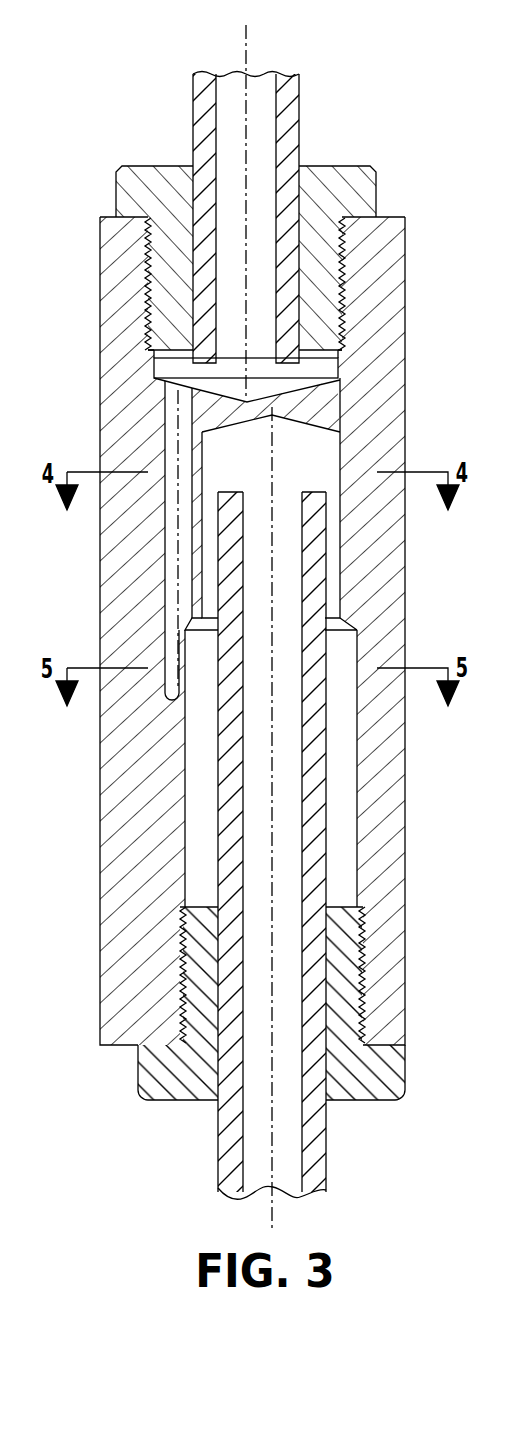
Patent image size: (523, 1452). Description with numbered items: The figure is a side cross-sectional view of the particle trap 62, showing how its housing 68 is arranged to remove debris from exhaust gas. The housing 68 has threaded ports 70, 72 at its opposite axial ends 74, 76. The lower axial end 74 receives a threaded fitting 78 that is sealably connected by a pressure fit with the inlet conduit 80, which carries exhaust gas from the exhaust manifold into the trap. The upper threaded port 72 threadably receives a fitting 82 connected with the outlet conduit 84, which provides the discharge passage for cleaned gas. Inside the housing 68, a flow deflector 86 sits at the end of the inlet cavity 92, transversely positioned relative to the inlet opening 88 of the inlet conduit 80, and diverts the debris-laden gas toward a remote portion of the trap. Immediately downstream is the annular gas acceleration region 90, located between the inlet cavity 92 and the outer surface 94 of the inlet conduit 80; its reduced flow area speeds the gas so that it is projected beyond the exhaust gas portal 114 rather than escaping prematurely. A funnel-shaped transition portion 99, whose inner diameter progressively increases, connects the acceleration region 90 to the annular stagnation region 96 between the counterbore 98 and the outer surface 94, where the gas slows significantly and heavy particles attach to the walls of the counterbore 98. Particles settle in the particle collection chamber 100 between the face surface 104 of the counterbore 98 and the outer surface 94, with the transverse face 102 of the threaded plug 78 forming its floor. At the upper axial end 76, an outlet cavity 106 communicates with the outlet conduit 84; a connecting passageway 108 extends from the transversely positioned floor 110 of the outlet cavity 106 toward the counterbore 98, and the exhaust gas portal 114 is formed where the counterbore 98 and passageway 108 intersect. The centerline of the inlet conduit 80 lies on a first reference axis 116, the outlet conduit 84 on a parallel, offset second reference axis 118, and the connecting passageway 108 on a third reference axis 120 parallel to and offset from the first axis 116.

The particle trap 62 is at (388, 118).
The housing 68 is at (100, 245).
The threaded port 70 is at (178, 1030).
The threaded port 72 is at (345, 290).
The axial end 74 is at (393, 1010).
The axial end 76 is at (384, 225).
The threaded fitting 78 is at (352, 953).
The inlet conduit 80 is at (317, 1157).
The fitting 82 is at (167, 305).
The outlet conduit 84 is at (302, 105).
The flow deflector 86 is at (322, 407).
The inlet opening 88 is at (300, 525).
The gas acceleration region 90 is at (330, 512).
The inlet cavity 92 is at (340, 460).
The outer surface 94 is at (345, 625).
The stagnation region 96 is at (347, 815).
The counterbore 98 is at (359, 788).
The transition portion 99 is at (185, 633).
The particle collection chamber 100 is at (347, 880).
The transverse face 102 is at (185, 893).
The face surface 104 is at (184, 820).
The outlet cavity 106 is at (322, 362).
The connecting passageway 108 is at (165, 518).
The floor 110 is at (168, 363).
The exhaust gas portal 114 is at (186, 697).
The first reference axis 116 is at (273, 1132).
The second reference axis 118 is at (248, 52).
The third reference axis 120 is at (168, 443).